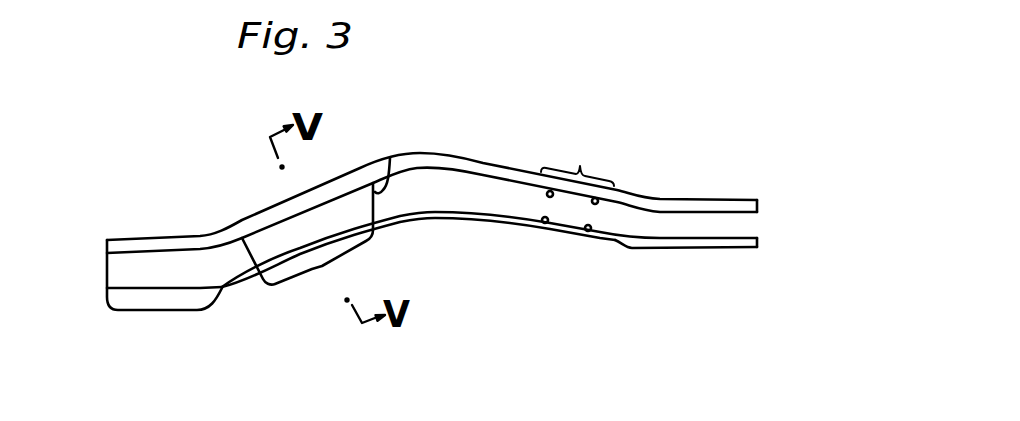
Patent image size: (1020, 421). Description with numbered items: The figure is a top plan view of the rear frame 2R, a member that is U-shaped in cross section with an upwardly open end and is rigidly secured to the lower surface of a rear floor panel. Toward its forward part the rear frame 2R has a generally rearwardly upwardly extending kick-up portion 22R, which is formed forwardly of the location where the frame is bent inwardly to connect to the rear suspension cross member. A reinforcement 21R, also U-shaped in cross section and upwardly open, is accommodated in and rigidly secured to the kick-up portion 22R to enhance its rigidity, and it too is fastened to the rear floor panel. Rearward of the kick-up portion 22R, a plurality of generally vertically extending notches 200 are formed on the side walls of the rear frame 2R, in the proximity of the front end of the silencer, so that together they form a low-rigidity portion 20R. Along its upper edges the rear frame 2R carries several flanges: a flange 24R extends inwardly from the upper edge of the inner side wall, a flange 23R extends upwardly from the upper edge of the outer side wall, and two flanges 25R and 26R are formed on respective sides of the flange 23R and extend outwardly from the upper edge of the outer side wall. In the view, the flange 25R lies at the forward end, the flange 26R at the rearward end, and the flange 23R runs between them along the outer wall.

The rear frame 2R is at (714, 194).
The low-rigidity portion 20R is at (583, 153).
The reinforcement 21R is at (390, 158).
The kick-up portion 22R is at (322, 275).
The flange 23R is at (447, 221).
The flange 24R is at (476, 166).
The flange 25R is at (175, 299).
The flange 26R is at (707, 244).
The notches 200 is at (592, 203).